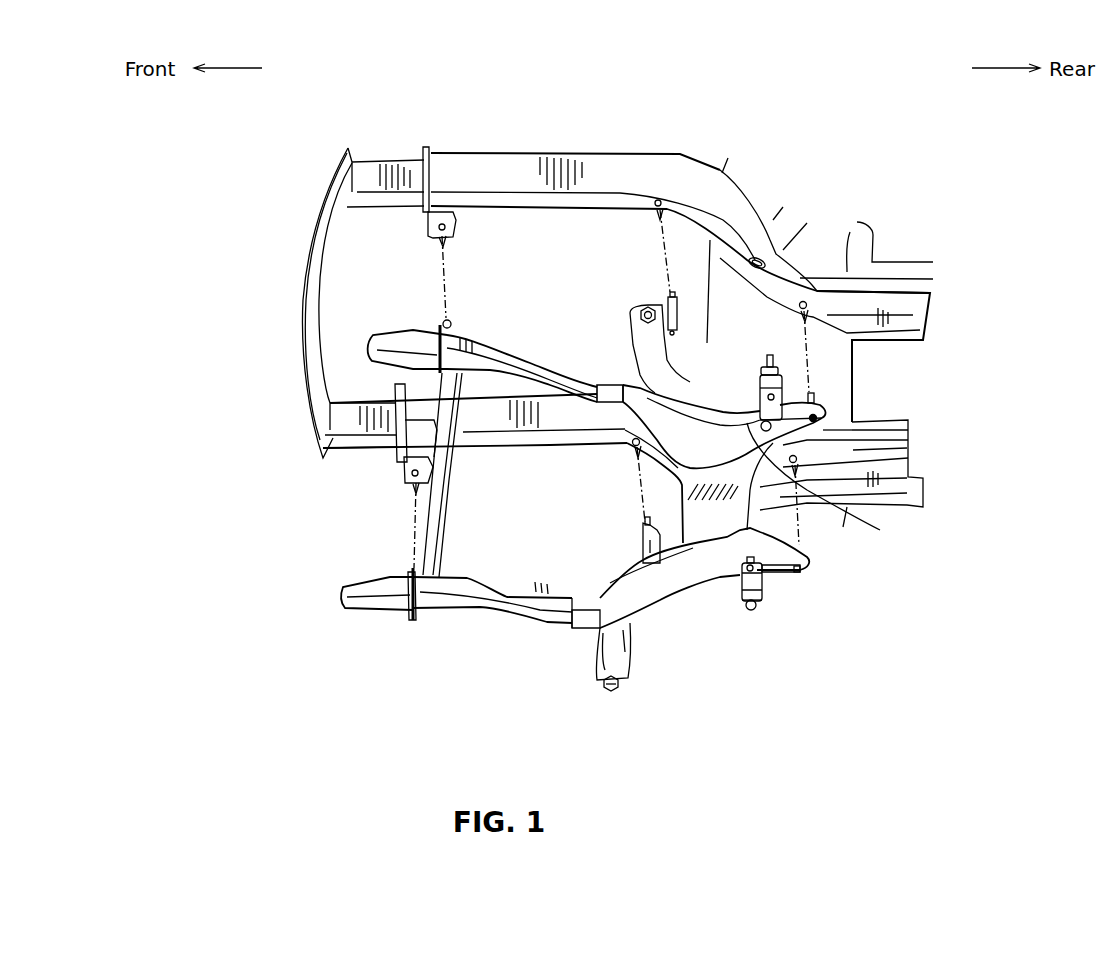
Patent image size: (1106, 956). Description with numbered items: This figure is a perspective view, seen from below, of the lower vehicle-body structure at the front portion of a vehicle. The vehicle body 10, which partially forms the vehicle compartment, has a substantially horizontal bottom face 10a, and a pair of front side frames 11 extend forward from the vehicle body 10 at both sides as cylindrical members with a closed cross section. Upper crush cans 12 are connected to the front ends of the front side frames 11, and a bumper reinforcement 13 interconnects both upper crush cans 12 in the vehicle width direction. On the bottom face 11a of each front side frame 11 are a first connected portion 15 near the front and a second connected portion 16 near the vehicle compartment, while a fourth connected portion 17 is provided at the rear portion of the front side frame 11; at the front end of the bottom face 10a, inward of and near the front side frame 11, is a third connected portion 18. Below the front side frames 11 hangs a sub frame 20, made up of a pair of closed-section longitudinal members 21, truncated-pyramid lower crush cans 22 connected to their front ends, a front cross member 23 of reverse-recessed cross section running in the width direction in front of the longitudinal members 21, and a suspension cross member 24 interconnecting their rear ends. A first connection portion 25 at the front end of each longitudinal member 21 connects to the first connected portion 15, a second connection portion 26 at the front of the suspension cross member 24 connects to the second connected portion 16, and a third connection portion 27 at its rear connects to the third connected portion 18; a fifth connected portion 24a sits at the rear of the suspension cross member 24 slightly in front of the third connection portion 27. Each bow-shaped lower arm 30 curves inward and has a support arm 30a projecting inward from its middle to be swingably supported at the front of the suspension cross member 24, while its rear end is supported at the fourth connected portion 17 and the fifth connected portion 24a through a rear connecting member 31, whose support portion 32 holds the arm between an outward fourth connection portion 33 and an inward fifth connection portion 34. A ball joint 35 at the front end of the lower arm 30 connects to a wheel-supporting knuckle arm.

The vehicle body 10 is at (947, 296).
The bottom face 10a is at (880, 460).
The front side frame 11 is at (592, 137).
The bottom face of front side frame 11a is at (517, 190).
The upper crush can 12 is at (388, 170).
The bumper reinforcement 13 is at (315, 268).
The first connected portion 15 is at (452, 195).
The second connected portion 16 is at (655, 195).
The fourth connected portion 17 is at (773, 252).
The third connected portion 18 is at (806, 298).
The sub frame 20 is at (490, 628).
The longitudinal member 21 is at (507, 335).
The lower crush can 22 is at (417, 343).
The front cross member 23 is at (437, 545).
The suspension cross member 24 is at (800, 513).
The fifth connected portion 24a is at (836, 415).
The first connection portion 25 is at (432, 320).
The second connection portion 26 is at (670, 295).
The third connection portion 27 is at (835, 430).
The lower arm 30 is at (617, 327).
The support arm 30a is at (640, 388).
The rear connecting member 31 is at (753, 347).
The support portion 32 is at (800, 400).
The fourth connection portion 33 is at (783, 396).
The fifth connection portion 34 is at (815, 417).
The ball joint 35 is at (638, 306).